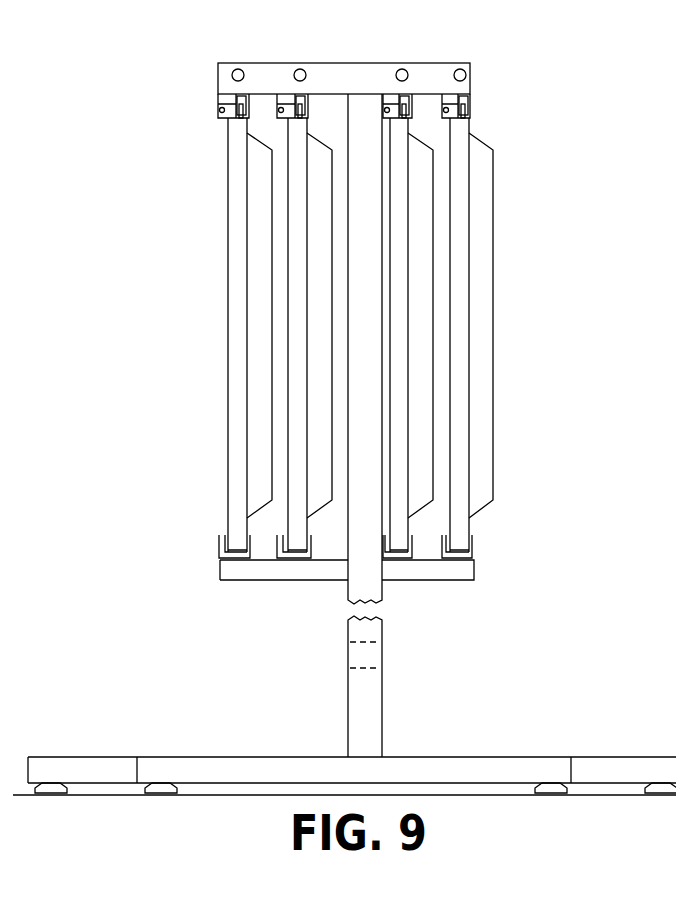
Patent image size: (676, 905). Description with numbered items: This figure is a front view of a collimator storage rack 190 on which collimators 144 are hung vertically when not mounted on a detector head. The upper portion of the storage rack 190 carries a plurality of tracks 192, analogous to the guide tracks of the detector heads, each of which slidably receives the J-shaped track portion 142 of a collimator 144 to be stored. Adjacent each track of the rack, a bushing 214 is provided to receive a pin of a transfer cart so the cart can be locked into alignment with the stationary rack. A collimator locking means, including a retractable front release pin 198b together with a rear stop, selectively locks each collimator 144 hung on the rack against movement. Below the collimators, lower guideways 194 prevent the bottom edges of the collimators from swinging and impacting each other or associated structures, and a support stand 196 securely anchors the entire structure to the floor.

The collimator storage rack 190 is at (472, 60).
The collimator track 142 is at (312, 44).
The bushing 214 is at (456, 62).
The retractable front release pin 198b is at (237, 100).
The track 192 is at (237, 120).
The collimator 144 is at (458, 182).
The lower guideway 194 is at (248, 538).
The support stand 196 is at (372, 707).